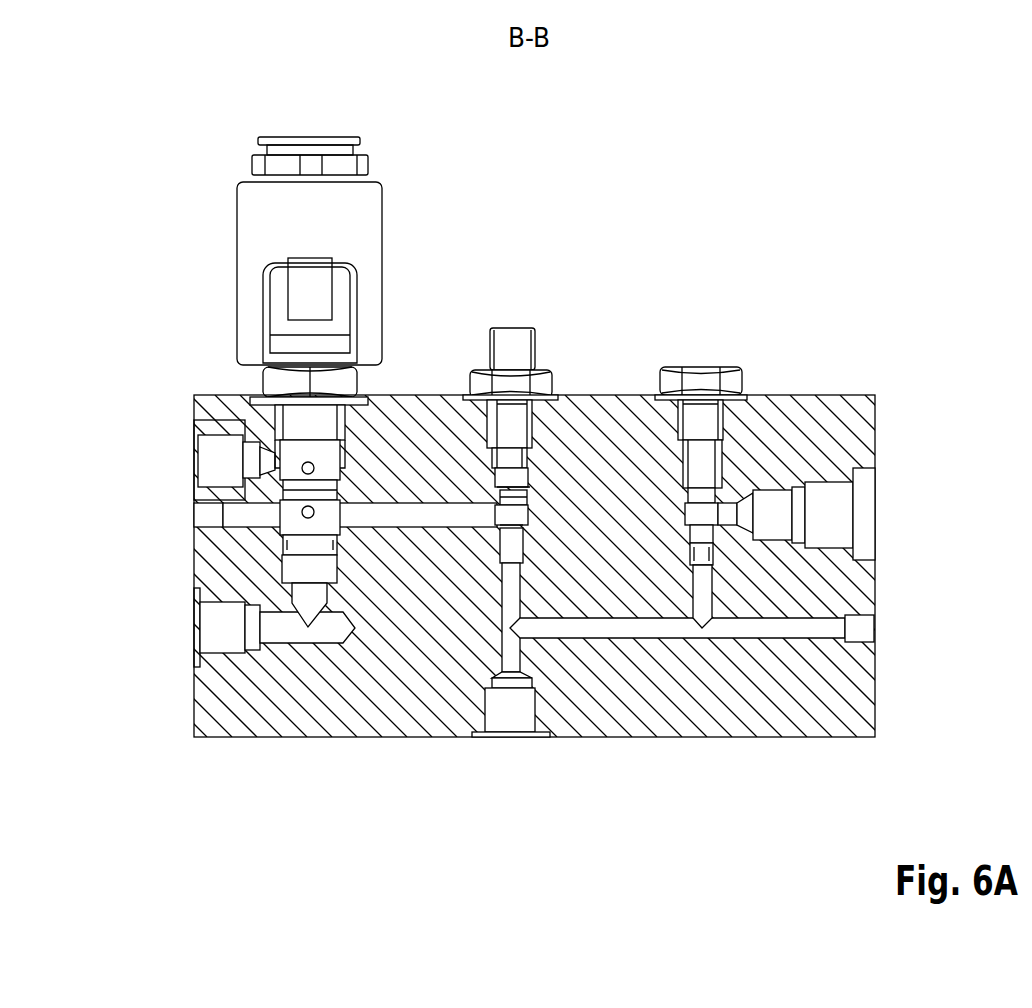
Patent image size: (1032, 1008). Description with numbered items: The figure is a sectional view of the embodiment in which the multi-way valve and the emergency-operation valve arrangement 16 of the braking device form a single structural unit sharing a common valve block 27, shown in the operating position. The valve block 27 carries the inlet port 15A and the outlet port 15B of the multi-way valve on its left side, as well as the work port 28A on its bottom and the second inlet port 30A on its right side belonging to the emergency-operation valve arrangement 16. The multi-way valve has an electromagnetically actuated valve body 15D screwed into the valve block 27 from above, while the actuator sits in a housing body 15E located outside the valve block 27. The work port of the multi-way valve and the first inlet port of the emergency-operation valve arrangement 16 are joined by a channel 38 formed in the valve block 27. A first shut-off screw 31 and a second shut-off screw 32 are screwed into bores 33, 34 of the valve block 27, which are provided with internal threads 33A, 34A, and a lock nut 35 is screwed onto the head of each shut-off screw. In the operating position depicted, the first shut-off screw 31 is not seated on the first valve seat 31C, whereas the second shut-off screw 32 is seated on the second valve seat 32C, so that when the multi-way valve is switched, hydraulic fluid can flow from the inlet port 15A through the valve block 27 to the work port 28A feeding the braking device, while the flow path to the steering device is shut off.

The electromagnetically actuated valve body 15D is at (266, 357).
The housing body 15E is at (245, 270).
The inlet port 15A is at (195, 462).
The outlet port 15B is at (195, 628).
The emergency-operation valve arrangement 16 is at (745, 207).
The valve block 27 is at (878, 371).
The first shut-off screw 31 is at (573, 526).
The second shut-off screw 32 is at (740, 541).
The bore 33 is at (518, 417).
The internal thread 33A is at (527, 428).
The bore 34 is at (707, 465).
The internal thread 34A is at (720, 477).
The lock nut 35 is at (475, 367).
The channel 38 is at (413, 510).
The second inlet port 30A is at (876, 512).
The first valve seat 31C is at (510, 530).
The work port 28A is at (510, 737).
The second valve seat 32C is at (702, 540).